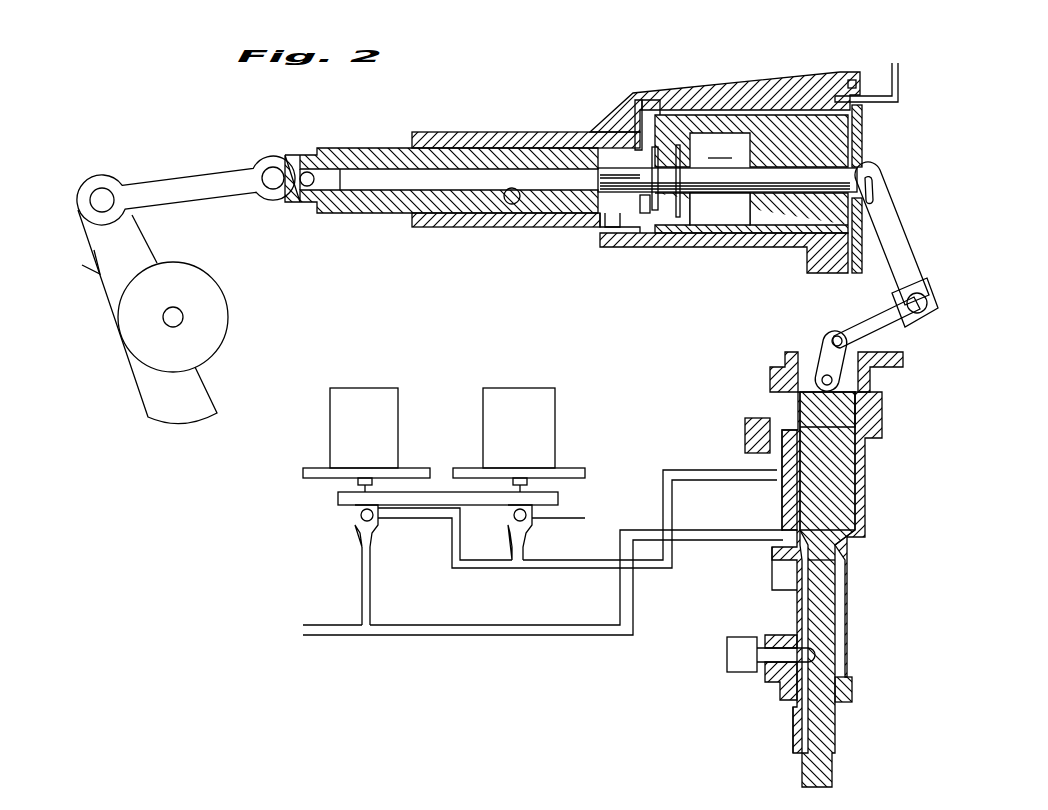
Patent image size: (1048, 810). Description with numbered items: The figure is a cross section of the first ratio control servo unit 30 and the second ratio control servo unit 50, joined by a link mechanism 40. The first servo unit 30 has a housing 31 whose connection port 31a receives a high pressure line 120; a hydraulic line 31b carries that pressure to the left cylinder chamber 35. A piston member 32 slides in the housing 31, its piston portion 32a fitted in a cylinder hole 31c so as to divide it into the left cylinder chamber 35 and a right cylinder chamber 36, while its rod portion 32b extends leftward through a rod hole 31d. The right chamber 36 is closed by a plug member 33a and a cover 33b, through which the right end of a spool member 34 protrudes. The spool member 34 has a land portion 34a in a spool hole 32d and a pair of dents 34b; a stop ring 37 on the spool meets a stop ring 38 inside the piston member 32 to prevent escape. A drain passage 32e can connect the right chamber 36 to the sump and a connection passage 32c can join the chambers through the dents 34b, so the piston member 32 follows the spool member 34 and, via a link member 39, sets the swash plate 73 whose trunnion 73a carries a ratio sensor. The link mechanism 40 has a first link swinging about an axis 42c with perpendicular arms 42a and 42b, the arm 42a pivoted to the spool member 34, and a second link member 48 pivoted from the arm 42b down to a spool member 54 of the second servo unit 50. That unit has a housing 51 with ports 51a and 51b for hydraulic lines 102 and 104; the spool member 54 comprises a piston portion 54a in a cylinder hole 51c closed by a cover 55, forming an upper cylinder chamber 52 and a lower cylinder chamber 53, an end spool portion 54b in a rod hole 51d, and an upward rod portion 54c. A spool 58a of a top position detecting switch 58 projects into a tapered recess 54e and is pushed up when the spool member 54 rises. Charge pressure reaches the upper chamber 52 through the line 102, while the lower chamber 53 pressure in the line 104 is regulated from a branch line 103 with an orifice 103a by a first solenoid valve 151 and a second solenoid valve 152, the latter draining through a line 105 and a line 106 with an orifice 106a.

The first ratio control servo unit 30 is at (578, 63).
The housing 31 is at (478, 132).
The connection port 31a is at (866, 90).
The hydraulic line 31b is at (738, 97).
The cylinder hole 31c is at (745, 240).
The rod hole 31d is at (475, 227).
The piston member 32 is at (350, 148).
The piston portion 32a is at (648, 232).
The rod portion 32b is at (395, 213).
The connection passage 32c is at (612, 135).
The spool hole 32d is at (516, 213).
The drain passage 32e is at (602, 230).
The plug member 33a is at (862, 158).
The cover 33b is at (862, 128).
The spool member 34 is at (700, 225).
The land portion 34a is at (597, 192).
The dents 34b is at (640, 128).
The left cylinder chamber 35 is at (605, 240).
The right cylinder chamber 36 is at (751, 174).
The stop ring 37 is at (660, 228).
The stop ring 38 is at (697, 228).
The link member 39 is at (185, 172).
The link mechanism 40 is at (940, 268).
The arm 42a is at (893, 235).
The arm 42b is at (878, 335).
The axis 42c is at (895, 303).
The second link member 48 is at (818, 350).
The second ratio control servo unit 50 is at (915, 553).
The housing 51 is at (868, 494).
The port 51a is at (760, 453).
The port 51b is at (758, 553).
The cylinder hole 51c is at (880, 455).
The rod hole 51d is at (835, 578).
The upper cylinder chamber 52 is at (790, 490).
The lower cylinder chamber 53 is at (785, 533).
The spool member 54 is at (840, 480).
The piston portion 54a is at (850, 530).
The end spool portion 54b is at (832, 612).
The rod portion 54c is at (832, 393).
The recess 54e is at (850, 688).
The cover 55 is at (770, 380).
The top position detecting switch 58 is at (742, 668).
The spool 58a is at (778, 660).
The swash plate 73 is at (193, 412).
The trunnion 73a is at (180, 317).
The hydraulic line 102 is at (503, 636).
The hydraulic line 103 is at (362, 588).
The orifice 103a is at (377, 548).
The hydraulic line 104 is at (545, 568).
The hydraulic line 105 is at (515, 530).
The hydraulic line 106 is at (578, 517).
The orifice 106a is at (548, 522).
The high pressure line 120 is at (900, 80).
The first duty-ratio-controlled solenoid valve 151 is at (388, 388).
The second duty-ratio-controlled solenoid valve 152 is at (545, 388).